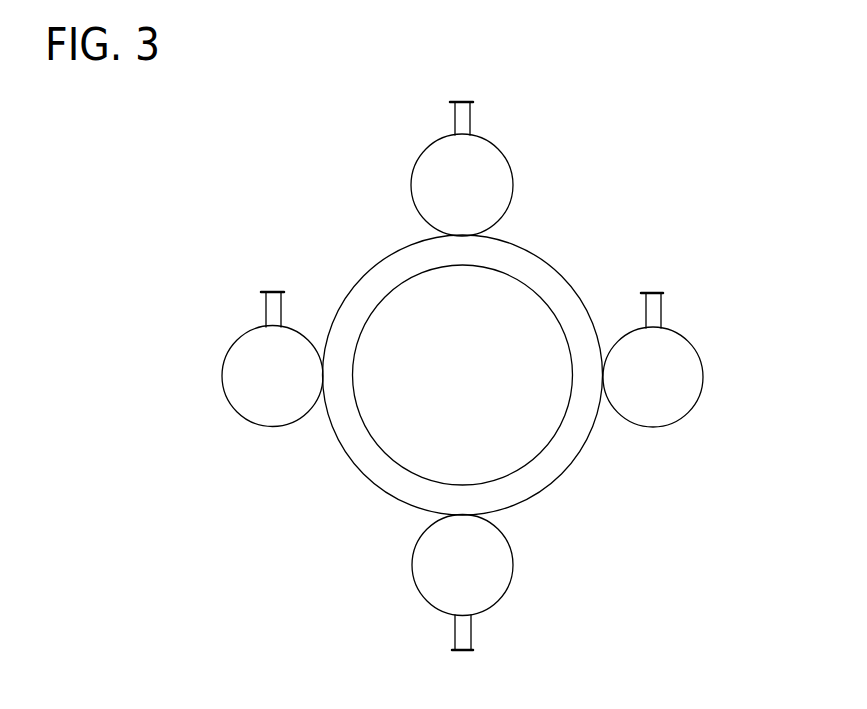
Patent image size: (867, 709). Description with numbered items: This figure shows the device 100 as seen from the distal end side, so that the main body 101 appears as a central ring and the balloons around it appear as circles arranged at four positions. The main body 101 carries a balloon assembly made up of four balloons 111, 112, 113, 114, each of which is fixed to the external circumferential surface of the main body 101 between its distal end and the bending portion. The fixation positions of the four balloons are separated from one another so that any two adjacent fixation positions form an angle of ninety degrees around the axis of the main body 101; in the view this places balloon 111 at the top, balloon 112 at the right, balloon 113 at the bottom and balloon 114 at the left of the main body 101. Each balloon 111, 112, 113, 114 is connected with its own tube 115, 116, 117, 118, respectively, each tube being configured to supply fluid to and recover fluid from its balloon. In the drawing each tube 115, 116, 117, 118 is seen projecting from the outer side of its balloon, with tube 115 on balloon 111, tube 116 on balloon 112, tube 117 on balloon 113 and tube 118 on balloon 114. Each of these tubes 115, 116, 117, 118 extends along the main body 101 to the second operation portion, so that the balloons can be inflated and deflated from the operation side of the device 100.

The assembly 100 is at (602, 211).
The main body 101 is at (563, 450).
The balloon 111 is at (497, 185).
The balloon 112 is at (687, 375).
The balloon 113 is at (495, 565).
The balloon 114 is at (238, 375).
The tube 115 is at (461, 118).
The tube 116 is at (655, 309).
The tube 117 is at (463, 630).
The tube 118 is at (267, 307).